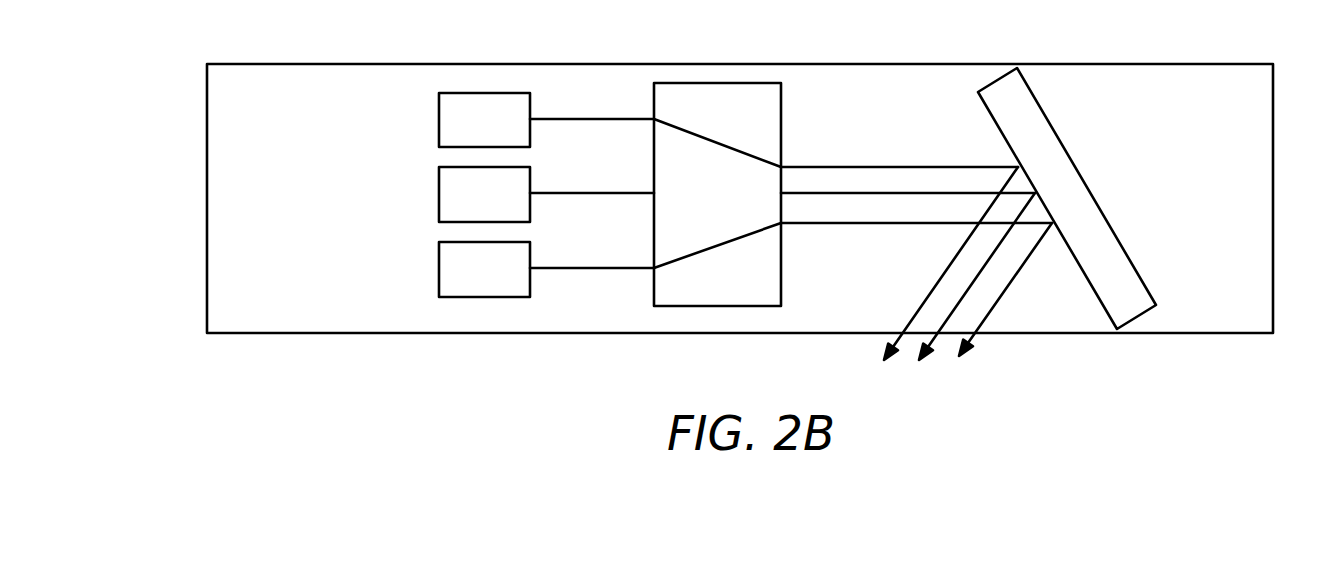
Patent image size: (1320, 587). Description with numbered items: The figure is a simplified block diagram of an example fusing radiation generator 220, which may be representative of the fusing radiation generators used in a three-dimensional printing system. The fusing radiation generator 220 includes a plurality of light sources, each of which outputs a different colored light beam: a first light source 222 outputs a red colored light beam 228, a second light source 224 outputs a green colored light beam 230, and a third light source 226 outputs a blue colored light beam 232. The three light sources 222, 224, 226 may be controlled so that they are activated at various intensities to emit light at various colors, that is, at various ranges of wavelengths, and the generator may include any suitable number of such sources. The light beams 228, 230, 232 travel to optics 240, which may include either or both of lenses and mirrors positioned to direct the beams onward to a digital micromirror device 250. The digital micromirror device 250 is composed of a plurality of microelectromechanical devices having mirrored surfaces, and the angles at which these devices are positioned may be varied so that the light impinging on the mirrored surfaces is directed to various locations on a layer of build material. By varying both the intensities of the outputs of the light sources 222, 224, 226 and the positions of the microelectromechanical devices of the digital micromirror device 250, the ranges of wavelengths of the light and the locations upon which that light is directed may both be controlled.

The fusing radiation generator 220 is at (756, 32).
The first light source 222 is at (439, 113).
The second light source 224 is at (439, 188).
The third light source 226 is at (439, 267).
The red colored light beam 228 is at (625, 119).
The green colored light beam 230 is at (637, 193).
The blue colored light beam 232 is at (628, 268).
The optics 240 is at (781, 139).
The digital micromirror device 250 is at (1058, 138).